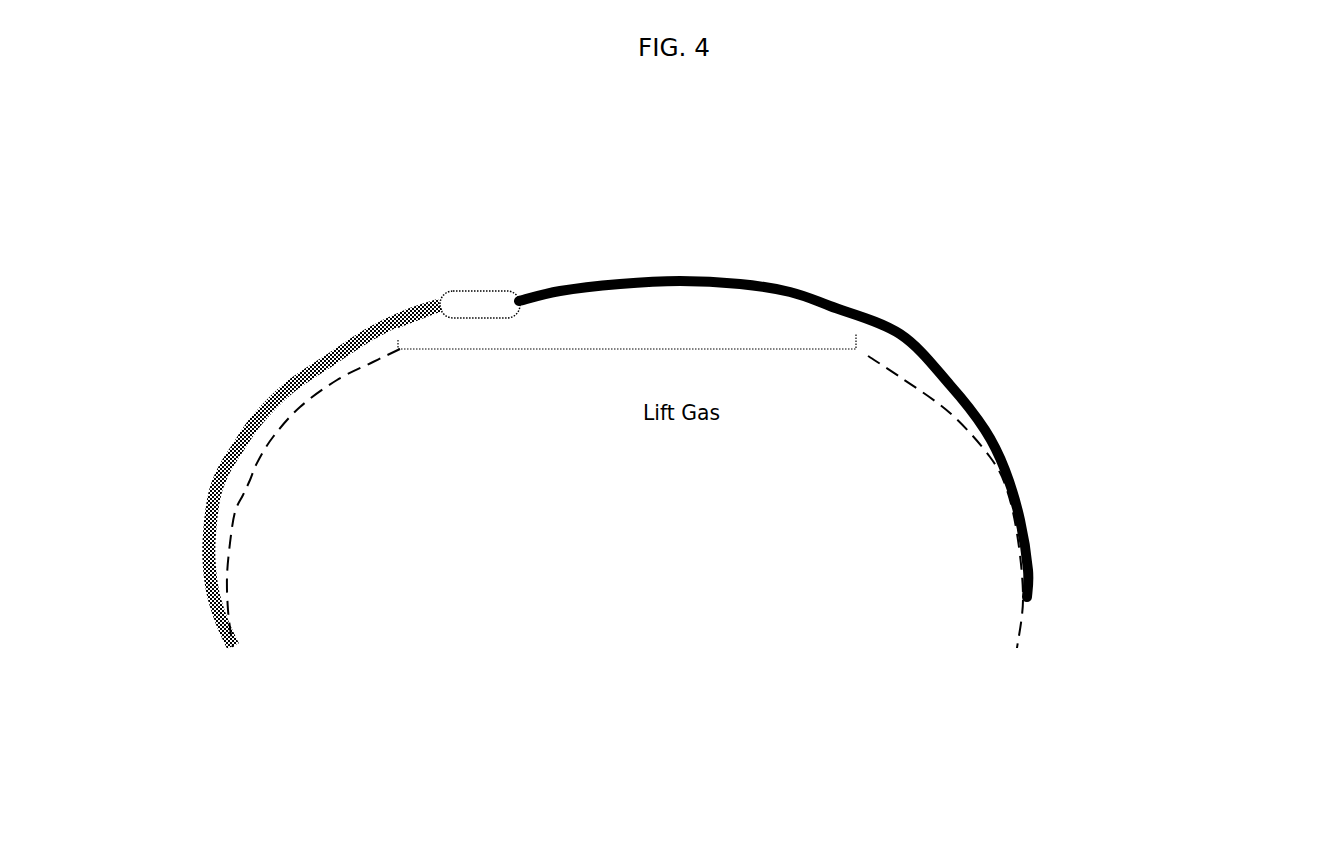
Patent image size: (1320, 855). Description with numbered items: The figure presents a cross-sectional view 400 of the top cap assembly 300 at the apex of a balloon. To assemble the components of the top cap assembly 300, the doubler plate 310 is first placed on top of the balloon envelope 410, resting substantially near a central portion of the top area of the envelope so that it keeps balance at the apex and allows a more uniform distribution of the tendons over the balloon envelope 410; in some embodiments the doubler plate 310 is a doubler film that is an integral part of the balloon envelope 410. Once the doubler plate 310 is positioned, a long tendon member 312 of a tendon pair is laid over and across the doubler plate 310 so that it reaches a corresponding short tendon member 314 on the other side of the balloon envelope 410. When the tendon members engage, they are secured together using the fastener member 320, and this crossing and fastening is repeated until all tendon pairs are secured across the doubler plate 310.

The top cap assembly 300 is at (1113, 202).
The doubler plate 310 is at (392, 330).
The long tendon member 312 is at (780, 285).
The short tendon member 314 is at (397, 313).
The fastener member 320 is at (480, 292).
The cross-sectional view 400 is at (1140, 54).
The balloon envelope 410 is at (1045, 630).